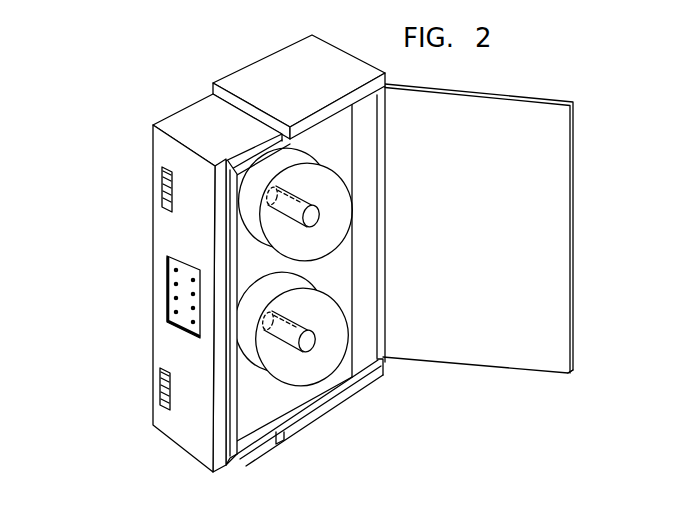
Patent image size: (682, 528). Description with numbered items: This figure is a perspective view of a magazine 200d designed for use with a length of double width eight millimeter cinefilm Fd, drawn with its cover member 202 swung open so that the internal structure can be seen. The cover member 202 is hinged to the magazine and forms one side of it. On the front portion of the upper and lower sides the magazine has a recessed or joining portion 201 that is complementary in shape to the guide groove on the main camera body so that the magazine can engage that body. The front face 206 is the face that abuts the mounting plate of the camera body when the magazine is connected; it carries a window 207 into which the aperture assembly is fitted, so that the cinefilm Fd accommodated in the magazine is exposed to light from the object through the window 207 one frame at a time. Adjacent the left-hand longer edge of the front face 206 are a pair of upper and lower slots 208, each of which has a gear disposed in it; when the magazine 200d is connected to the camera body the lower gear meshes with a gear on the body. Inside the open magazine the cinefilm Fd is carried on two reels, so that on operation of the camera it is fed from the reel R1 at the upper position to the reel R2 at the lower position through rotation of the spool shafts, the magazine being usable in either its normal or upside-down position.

The magazine 200d is at (241, 55).
The recessed or joining portion 201 is at (196, 284).
The cover member 202 is at (558, 203).
The front face 206 is at (162, 298).
The window 207 is at (170, 285).
The slot 208 is at (162, 184).
The reel R1 is at (296, 204).
The reel R2 is at (292, 329).
The small-sized cinefilm Fd is at (191, 252).